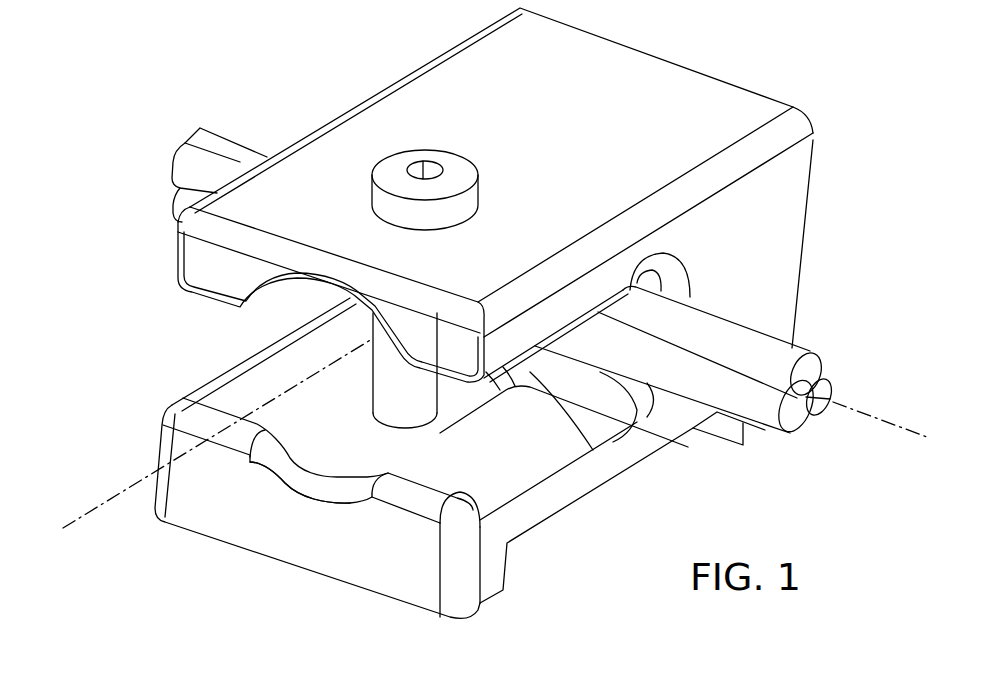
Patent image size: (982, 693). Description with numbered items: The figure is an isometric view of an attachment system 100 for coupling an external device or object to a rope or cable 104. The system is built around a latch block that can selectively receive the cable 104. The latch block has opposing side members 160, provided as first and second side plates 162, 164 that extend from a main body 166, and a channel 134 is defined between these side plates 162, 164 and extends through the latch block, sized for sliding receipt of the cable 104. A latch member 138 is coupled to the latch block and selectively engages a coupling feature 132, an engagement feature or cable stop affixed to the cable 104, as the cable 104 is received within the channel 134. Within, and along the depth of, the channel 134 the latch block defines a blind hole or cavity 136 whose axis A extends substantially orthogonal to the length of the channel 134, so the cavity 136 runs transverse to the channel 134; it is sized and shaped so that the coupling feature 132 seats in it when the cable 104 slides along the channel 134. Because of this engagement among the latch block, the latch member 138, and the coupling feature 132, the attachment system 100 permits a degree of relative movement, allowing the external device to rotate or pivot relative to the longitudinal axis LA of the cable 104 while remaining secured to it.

The attachment system 100 is at (118, 114).
The rope or cable 104 is at (730, 353).
The coupling feature 132 is at (578, 398).
The channel 134 is at (613, 457).
The blind hole or cavity 136 is at (323, 425).
The latch member 138 is at (452, 167).
The opposing side members 160 is at (423, 337).
The first side plate 162 is at (395, 570).
The second side plate 164 is at (215, 272).
The main body 166 is at (637, 72).
The axis A is at (112, 497).
The longitudinal axis LA is at (873, 418).